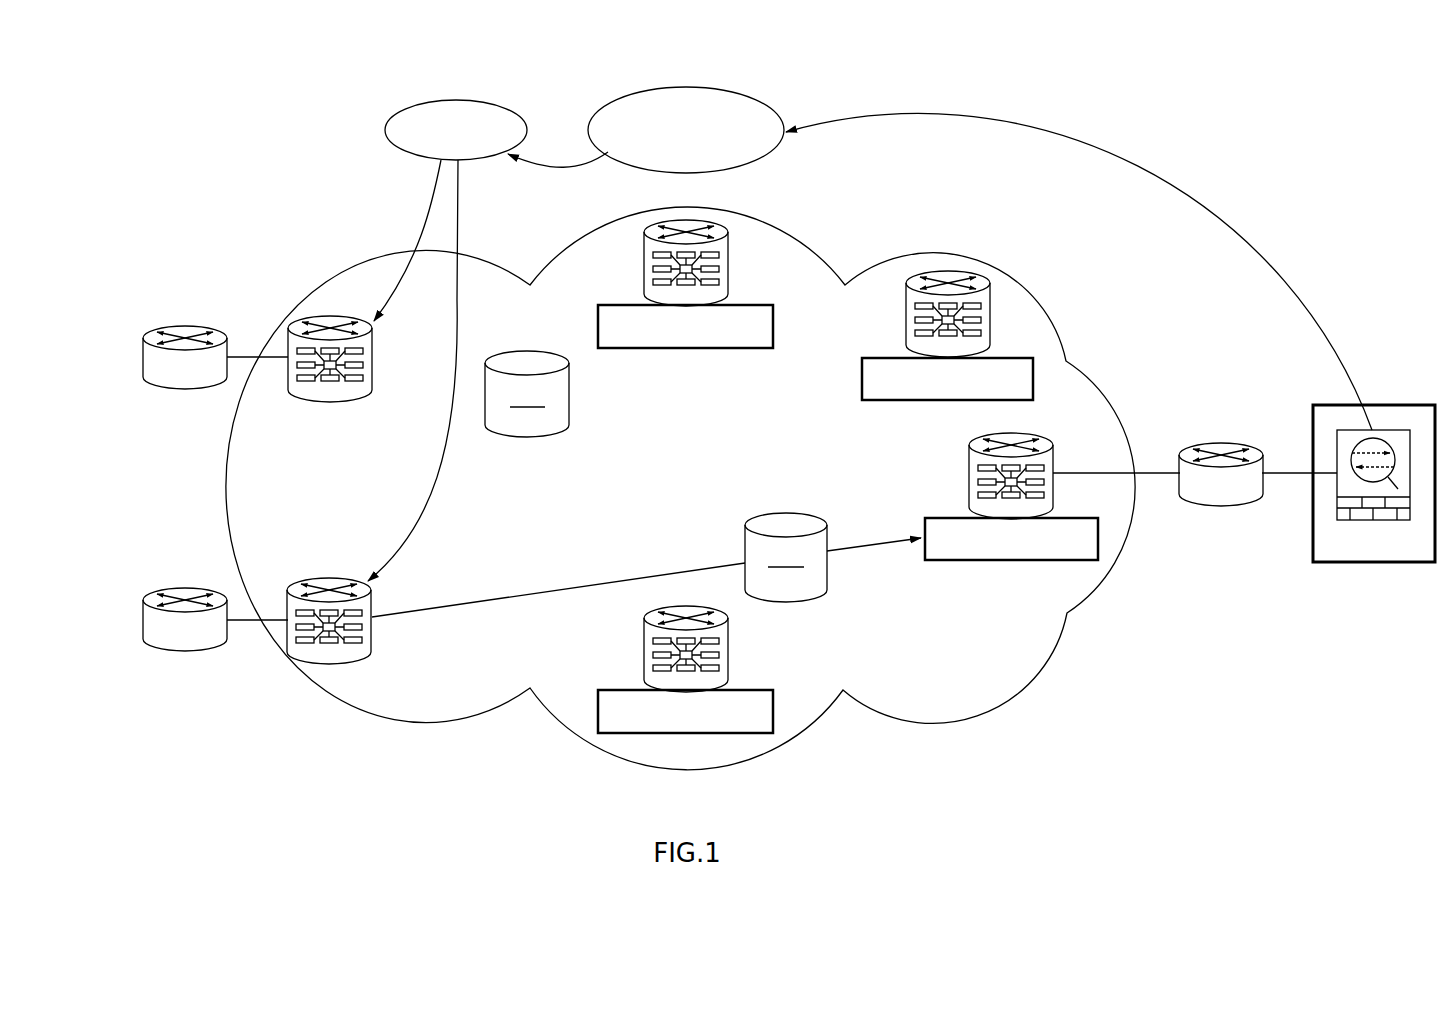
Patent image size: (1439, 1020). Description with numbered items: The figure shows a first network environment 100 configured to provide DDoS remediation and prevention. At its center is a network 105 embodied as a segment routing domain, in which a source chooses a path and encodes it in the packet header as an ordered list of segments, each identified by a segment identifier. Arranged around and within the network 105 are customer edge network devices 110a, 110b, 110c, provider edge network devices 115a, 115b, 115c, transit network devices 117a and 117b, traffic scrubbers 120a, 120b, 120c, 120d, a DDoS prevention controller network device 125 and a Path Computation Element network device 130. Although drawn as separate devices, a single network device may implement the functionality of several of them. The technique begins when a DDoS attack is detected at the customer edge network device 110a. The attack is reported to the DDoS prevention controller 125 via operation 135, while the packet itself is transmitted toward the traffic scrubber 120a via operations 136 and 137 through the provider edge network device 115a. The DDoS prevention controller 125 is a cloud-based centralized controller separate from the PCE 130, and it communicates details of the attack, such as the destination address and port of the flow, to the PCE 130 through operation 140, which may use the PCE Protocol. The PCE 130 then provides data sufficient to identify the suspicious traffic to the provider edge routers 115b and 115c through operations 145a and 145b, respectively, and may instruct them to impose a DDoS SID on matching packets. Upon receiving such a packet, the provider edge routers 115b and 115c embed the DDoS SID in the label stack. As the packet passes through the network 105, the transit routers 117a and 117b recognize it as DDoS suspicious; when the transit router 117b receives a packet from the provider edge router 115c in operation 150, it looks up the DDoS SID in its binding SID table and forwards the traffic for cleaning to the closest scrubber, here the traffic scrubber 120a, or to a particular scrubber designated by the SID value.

The network environment 100 is at (1205, 131).
The network 105 is at (812, 251).
The customer edge network device 110a is at (1388, 405).
The customer edge network device 110b is at (143, 358).
The customer edge network device 110c is at (143, 620).
The provider edge network device 115a is at (1223, 505).
The provider edge network device 115b is at (334, 392).
The provider edge network device 115c is at (333, 583).
The transit network device 117a is at (527, 394).
The transit network device 117b is at (786, 557).
The traffic scrubber 120a is at (970, 474).
The traffic scrubber 120b is at (907, 328).
The traffic scrubber 120c is at (645, 281).
The traffic scrubber 120d is at (645, 665).
The DDoS prevention controller network device 125 is at (725, 90).
The Path Computation Element network device 130 is at (395, 114).
The operation 135 is at (1250, 253).
The operation 136 is at (1295, 475).
The operation 137 is at (1158, 472).
The operation 140 is at (566, 172).
The operation 145a is at (430, 213).
The operation 145b is at (456, 366).
The operation 150 is at (498, 599).